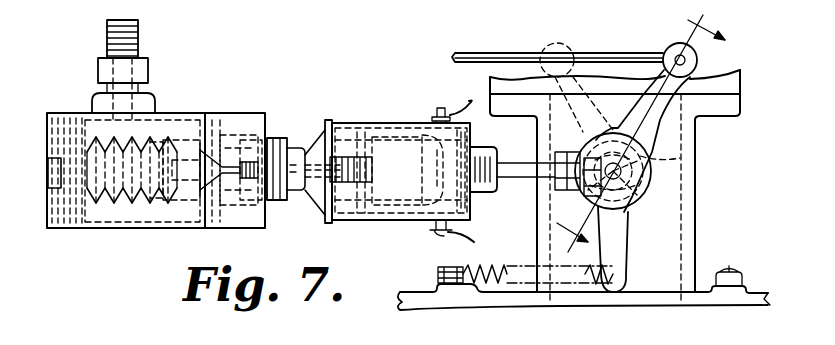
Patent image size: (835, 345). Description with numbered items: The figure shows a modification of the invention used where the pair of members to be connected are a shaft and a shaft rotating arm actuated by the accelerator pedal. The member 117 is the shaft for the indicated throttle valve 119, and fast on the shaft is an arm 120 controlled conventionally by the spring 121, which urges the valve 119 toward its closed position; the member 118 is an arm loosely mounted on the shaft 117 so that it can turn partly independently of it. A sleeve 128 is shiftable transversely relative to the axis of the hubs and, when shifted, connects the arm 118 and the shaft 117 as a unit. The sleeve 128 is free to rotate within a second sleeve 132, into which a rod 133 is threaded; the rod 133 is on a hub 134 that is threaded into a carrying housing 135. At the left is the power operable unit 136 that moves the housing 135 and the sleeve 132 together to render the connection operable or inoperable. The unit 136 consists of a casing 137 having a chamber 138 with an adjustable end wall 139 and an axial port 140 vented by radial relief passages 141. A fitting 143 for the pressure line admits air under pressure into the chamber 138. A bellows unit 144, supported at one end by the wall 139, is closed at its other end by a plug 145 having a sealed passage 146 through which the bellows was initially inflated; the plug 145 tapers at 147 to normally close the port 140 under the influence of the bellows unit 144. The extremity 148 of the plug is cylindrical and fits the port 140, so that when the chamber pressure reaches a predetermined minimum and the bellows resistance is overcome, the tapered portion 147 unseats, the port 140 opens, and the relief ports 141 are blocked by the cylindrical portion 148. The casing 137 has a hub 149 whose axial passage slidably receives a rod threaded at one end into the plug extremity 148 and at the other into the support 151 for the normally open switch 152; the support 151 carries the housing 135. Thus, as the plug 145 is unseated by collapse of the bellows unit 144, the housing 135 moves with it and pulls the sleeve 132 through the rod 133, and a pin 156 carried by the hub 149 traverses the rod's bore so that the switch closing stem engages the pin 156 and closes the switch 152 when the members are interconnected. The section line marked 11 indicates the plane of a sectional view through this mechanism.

The section line 11- 11 is at (643, 138).
The shaft 117 is at (632, 203).
The arm 118 is at (646, 128).
The throttle valve 119 is at (682, 160).
The arm 120 is at (622, 250).
The spring 121 is at (483, 267).
The sleeve 128 is at (643, 192).
The sleeve 132 is at (588, 158).
The rod 133 is at (520, 180).
The hub 134 is at (476, 160).
The carrying housing 135 is at (375, 123).
The power operable unit 136 is at (203, 108).
The casing 137 is at (110, 228).
The chamber 138 is at (150, 135).
The adjustable end wall 139 is at (60, 226).
The axial port 140 is at (212, 228).
The radial relief passages 141 is at (248, 140).
The fitting 143 is at (138, 43).
The bellows unit 144 is at (112, 145).
The plug 145 is at (170, 145).
The sealed passage 146 is at (168, 200).
The tapered portion 147 is at (210, 150).
The cylindrical extremity 148 is at (271, 136).
The hub 149 is at (288, 205).
The support 151 is at (328, 122).
The normally open switch 152 is at (400, 205).
The pin 156 is at (296, 148).